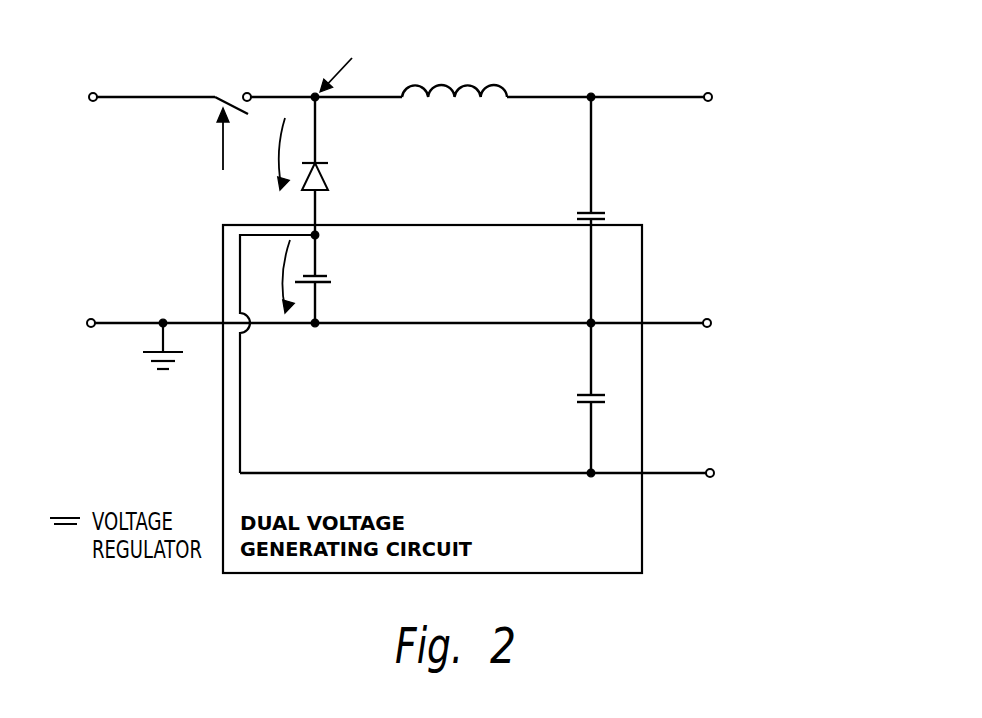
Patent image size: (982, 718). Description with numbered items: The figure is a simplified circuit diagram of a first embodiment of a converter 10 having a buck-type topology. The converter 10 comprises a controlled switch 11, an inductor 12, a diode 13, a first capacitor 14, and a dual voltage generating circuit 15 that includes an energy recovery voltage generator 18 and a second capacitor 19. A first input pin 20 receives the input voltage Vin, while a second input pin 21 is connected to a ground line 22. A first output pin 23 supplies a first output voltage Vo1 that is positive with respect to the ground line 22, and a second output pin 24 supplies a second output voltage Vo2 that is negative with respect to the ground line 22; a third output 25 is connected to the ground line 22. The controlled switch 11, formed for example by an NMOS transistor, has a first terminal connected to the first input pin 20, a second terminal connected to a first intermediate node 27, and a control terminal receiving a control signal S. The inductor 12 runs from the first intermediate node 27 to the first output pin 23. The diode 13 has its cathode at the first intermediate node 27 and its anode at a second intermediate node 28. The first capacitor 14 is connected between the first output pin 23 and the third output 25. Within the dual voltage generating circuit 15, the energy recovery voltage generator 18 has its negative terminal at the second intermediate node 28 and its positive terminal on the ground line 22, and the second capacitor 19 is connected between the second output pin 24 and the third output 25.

The converter 10 is at (722, 170).
The controlled switch 11 is at (215, 95).
The inductor 12 is at (443, 83).
The diode 13 is at (325, 178).
The first capacitor 14 is at (603, 210).
The dual voltage generating circuit 15 is at (618, 312).
The energy recovery voltage generator 18 is at (330, 279).
The second capacitor 19 is at (603, 400).
The first input pin 20 is at (92, 103).
The second input pin 21 is at (93, 318).
The ground line 22 is at (155, 360).
The first output pin 23 is at (592, 95).
The second output pin 24 is at (708, 480).
The third output 25 is at (713, 330).
The first intermediate node 27 is at (315, 95).
The second intermediate node 28 is at (318, 235).